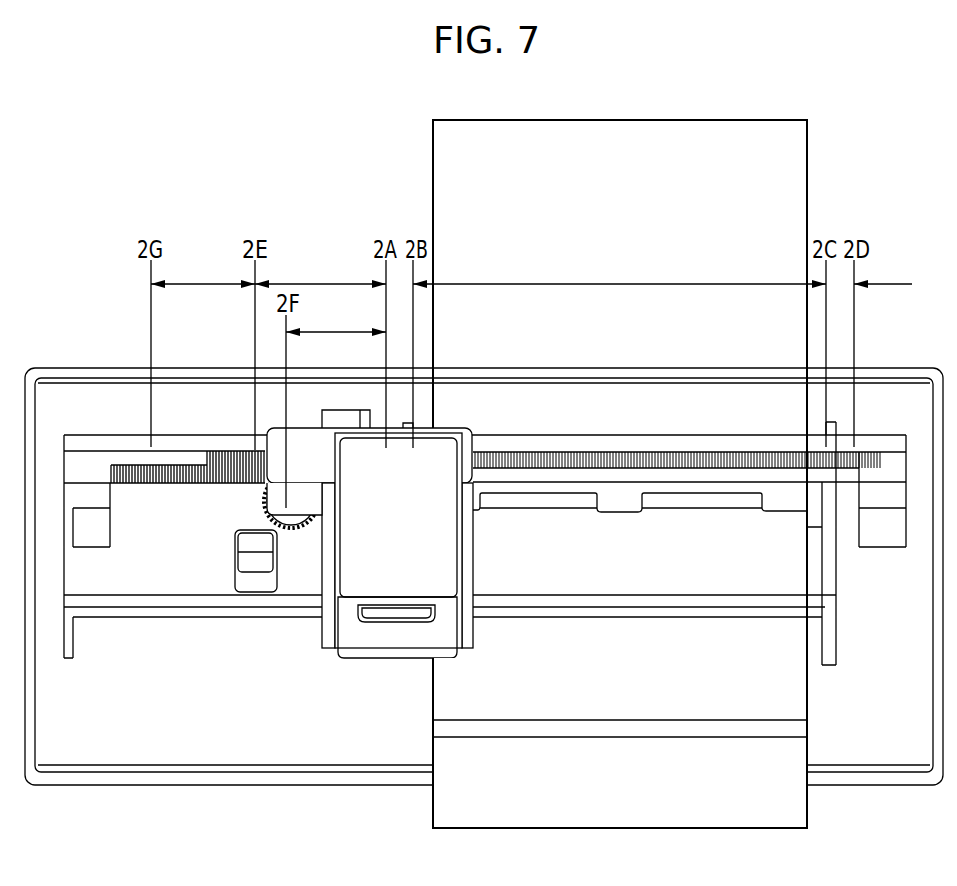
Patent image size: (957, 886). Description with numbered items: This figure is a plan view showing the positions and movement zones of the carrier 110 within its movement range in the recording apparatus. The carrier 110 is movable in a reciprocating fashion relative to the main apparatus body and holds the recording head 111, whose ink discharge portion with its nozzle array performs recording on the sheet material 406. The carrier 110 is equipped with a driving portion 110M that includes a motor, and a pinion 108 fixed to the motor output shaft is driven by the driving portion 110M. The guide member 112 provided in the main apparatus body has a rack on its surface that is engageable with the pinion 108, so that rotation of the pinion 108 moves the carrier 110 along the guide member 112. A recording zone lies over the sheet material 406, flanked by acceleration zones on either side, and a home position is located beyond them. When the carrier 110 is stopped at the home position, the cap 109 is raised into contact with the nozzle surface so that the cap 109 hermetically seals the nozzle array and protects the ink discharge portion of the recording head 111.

The sheet material 406 is at (797, 148).
The guide member 112 is at (240, 438).
The driving portion 110M is at (270, 498).
The carrier 110 is at (468, 523).
The pinion 108 is at (303, 530).
The recording head 111 is at (437, 635).
The cap 109 is at (238, 542).